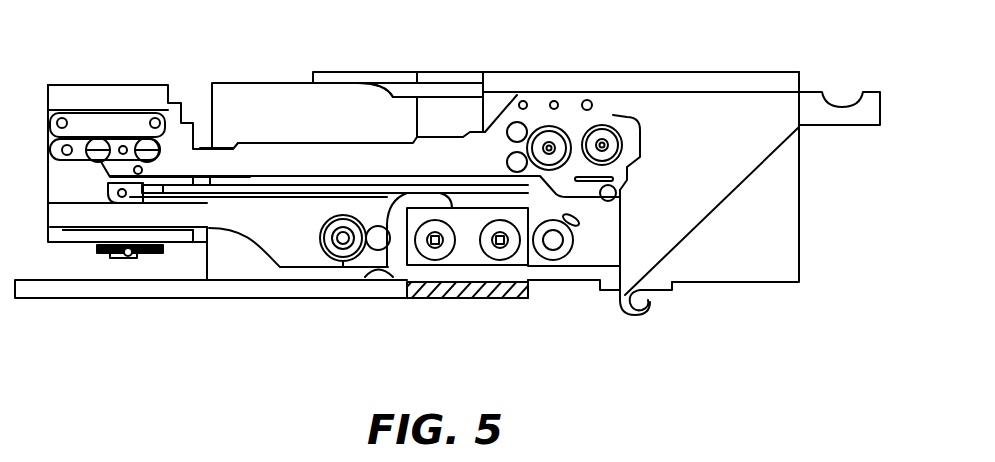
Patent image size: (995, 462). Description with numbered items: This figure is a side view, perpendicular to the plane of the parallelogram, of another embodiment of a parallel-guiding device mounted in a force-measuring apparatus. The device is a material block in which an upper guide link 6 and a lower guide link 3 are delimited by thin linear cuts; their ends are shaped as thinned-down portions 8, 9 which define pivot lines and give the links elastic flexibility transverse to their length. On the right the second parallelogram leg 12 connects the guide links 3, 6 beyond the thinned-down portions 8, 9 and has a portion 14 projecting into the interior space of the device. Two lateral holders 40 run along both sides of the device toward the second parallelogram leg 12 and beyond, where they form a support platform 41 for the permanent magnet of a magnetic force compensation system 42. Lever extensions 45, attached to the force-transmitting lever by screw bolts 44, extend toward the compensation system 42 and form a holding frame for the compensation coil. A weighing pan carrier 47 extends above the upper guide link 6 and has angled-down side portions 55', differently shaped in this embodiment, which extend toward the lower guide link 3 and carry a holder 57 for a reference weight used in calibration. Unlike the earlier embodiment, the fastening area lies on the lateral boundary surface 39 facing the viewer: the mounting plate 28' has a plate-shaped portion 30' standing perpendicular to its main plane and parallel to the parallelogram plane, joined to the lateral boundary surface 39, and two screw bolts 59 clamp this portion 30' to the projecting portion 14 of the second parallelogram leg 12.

The magnetic force compensation system 42 is at (35, 104).
The second parallelogram leg 12 is at (274, 100).
The lever extensions 45 is at (343, 158).
The thinned-down portion 9 is at (374, 97).
The upper guide link 6 is at (452, 90).
The portion projecting into the interior space 14 is at (423, 127).
The screw bolts 44 is at (602, 145).
The weighing pan carrier 47 is at (672, 87).
The holder 57 is at (830, 102).
The support platform 41 is at (62, 243).
The mounting plate 28' is at (271, 307).
The lateral holders 40 is at (262, 228).
The thinned-down portion 8 is at (373, 278).
The lateral boundary surface 39 is at (399, 257).
The screw bolts 59 is at (435, 240).
The plate-shaped portion 30' is at (488, 294).
The lower guide link 3 is at (572, 280).
The side portions 55' is at (668, 290).